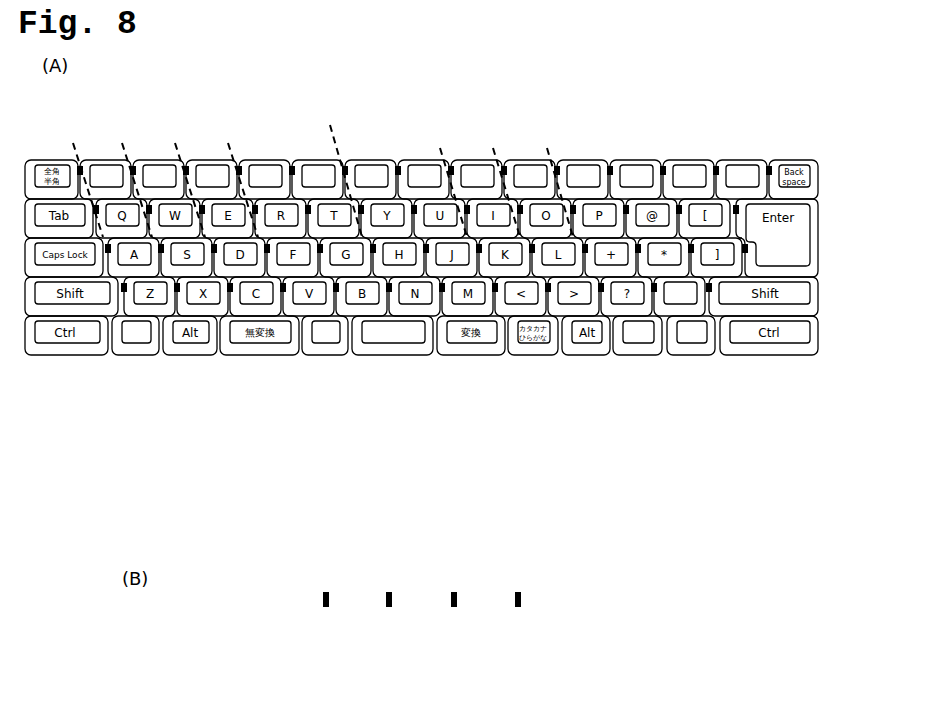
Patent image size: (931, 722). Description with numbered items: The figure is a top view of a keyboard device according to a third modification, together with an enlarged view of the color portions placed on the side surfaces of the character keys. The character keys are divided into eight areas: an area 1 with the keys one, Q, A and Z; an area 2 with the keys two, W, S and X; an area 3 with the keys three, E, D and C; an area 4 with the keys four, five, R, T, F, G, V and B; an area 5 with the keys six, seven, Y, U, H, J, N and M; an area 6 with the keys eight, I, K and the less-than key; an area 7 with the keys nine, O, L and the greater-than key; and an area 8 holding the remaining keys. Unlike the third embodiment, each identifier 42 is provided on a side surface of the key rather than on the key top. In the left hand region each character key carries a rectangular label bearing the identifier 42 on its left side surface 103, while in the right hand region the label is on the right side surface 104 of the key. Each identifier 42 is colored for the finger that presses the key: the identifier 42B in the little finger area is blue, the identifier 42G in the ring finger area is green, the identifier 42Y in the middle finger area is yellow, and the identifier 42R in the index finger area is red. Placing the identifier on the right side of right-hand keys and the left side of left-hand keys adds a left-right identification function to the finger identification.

The area 1 is at (78, 149).
The area 2 is at (127, 149).
The area 3 is at (178, 149).
The area 4 is at (317, 149).
The area 5 is at (358, 149).
The area 6 is at (448, 149).
The area 7 is at (500, 149).
The area 8 is at (575, 149).
The identifier 42 is at (125, 388).
The identifier 42B is at (126, 292).
The identifier 42G is at (178, 292).
The identifier 42Y is at (230, 292).
The identifier 42R is at (284, 292).
The left side surface 103 is at (348, 332).
The right side surface 104 is at (428, 336).